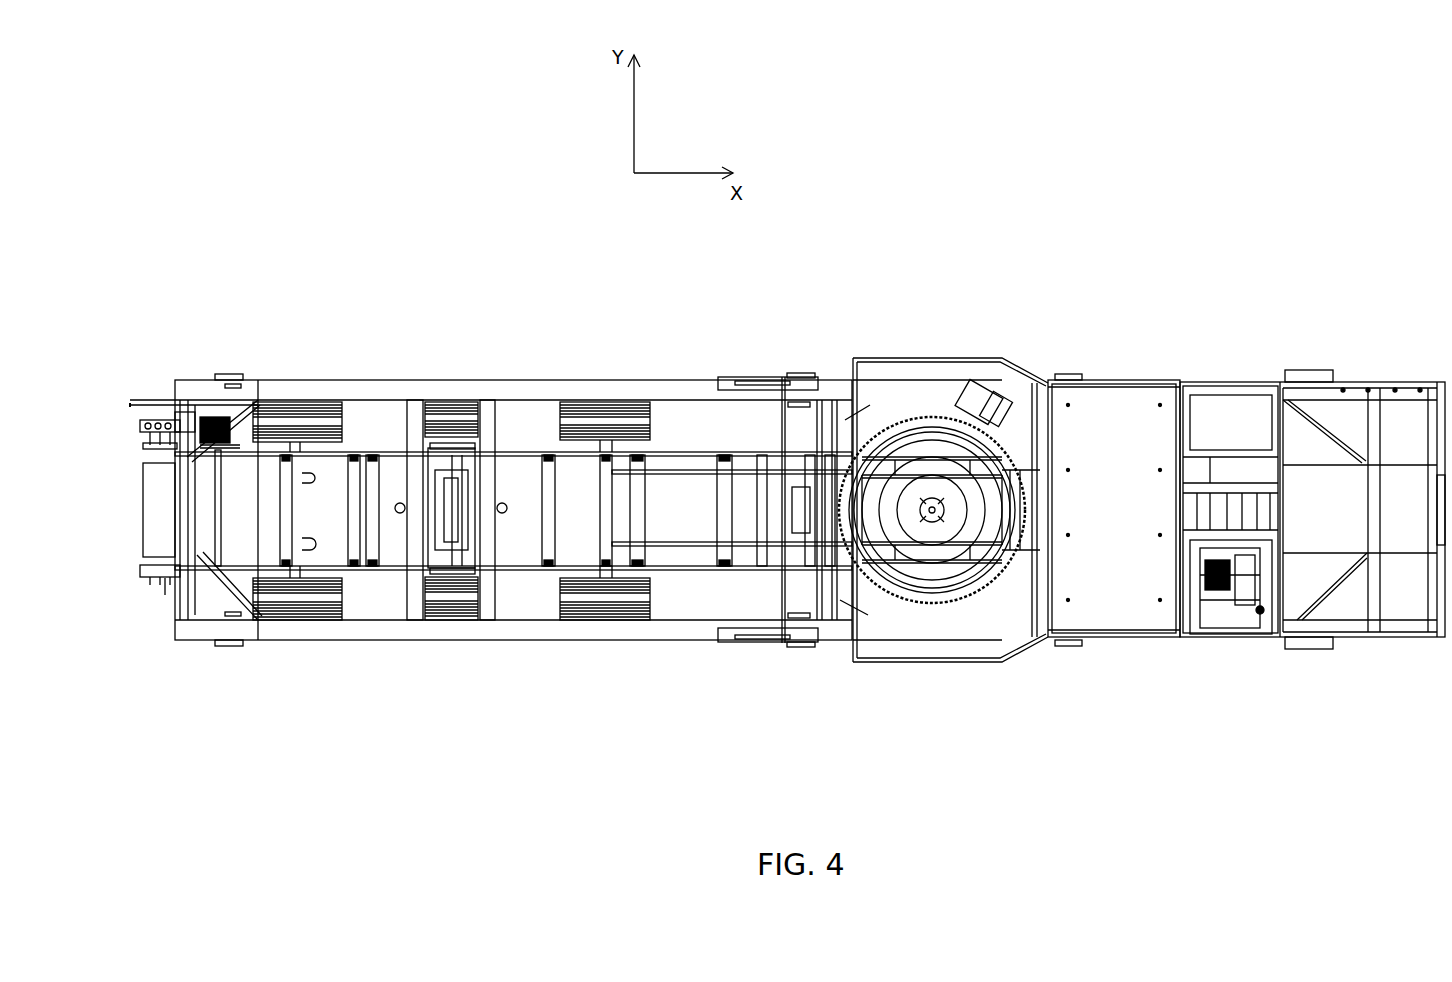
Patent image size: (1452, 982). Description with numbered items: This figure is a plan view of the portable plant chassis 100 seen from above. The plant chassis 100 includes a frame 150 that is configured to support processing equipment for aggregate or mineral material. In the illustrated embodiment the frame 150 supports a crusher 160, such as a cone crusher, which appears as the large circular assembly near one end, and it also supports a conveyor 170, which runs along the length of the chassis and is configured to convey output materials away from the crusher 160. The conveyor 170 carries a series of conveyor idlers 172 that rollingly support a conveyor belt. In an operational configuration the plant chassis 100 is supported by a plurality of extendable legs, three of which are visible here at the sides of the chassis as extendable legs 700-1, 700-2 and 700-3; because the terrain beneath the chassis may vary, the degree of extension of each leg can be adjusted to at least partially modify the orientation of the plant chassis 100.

The plant chassis 100 is at (156, 143).
The frame 150 is at (1197, 385).
The crusher 160 is at (924, 328).
The conveyor 170 is at (530, 600).
The conveyor idlers 172 is at (380, 508).
The extendable leg 700-1 is at (1068, 372).
The extendable leg 700-2 is at (806, 360).
The extendable leg 700-3 is at (231, 371).